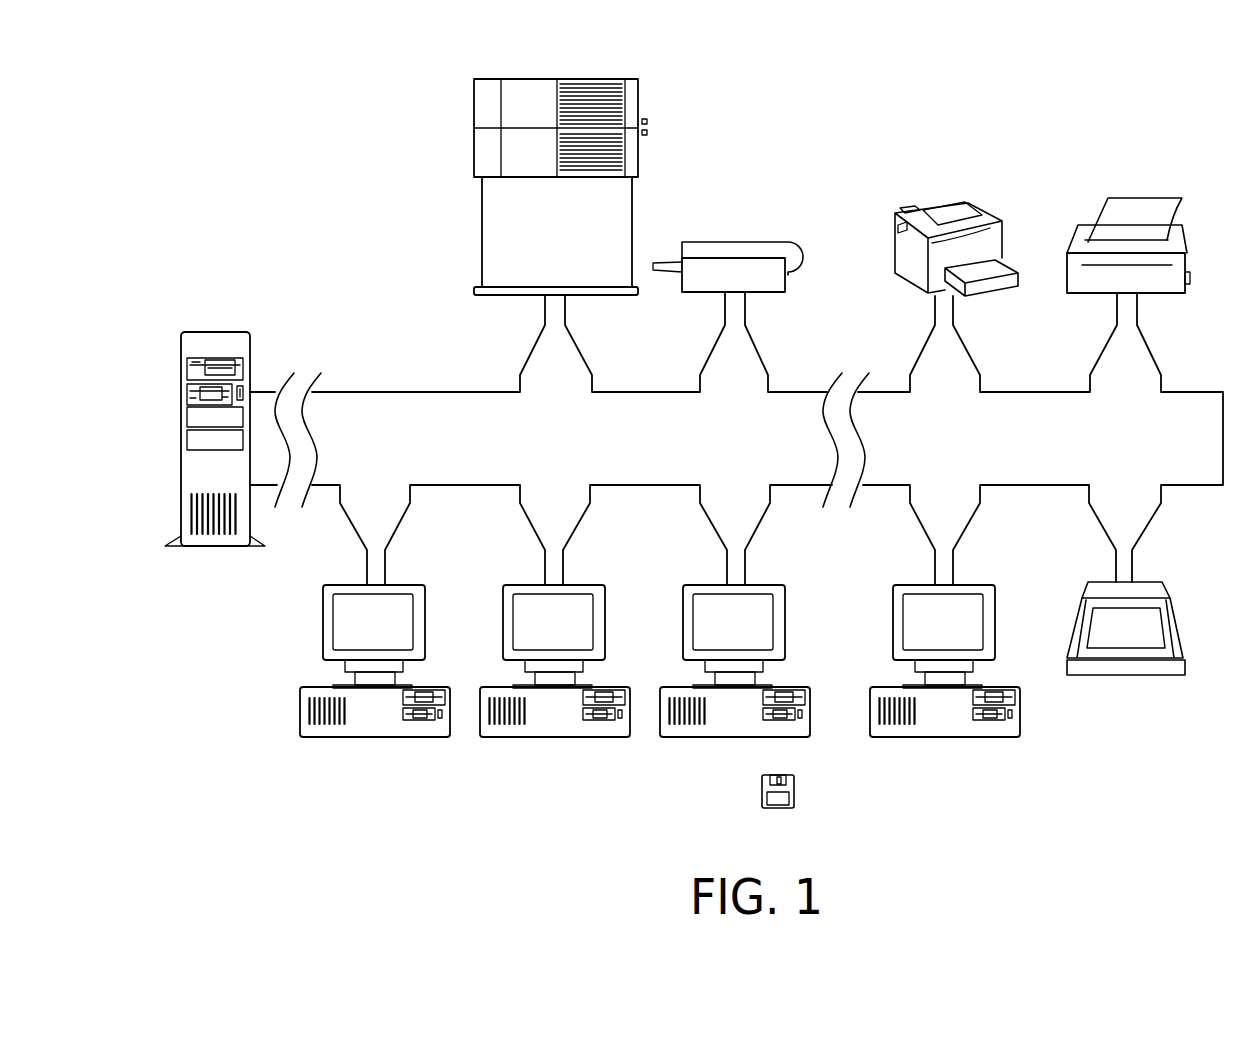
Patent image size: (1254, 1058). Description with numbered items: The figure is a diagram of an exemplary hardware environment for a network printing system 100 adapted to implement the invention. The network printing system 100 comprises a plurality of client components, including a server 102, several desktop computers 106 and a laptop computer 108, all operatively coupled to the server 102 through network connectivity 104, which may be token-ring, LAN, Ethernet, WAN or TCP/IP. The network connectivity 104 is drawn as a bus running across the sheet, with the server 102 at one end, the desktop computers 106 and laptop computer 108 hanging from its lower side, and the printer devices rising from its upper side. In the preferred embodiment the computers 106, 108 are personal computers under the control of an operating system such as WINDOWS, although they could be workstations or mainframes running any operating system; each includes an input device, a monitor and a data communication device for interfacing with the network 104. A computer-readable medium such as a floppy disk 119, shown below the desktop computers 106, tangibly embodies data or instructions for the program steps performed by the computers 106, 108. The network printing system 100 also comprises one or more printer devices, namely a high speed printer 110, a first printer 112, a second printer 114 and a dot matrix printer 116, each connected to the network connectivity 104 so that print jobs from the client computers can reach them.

The network printing system 100 is at (1016, 90).
The server 102 is at (208, 548).
The network connectivity 104 is at (342, 392).
The desktop computers 106 is at (350, 737).
The laptop computer 108 is at (1152, 675).
The high speed printer 110 is at (540, 79).
The first printer 112 is at (737, 242).
The second printer 114 is at (970, 210).
The dot matrix printer 116 is at (1158, 198).
The floppy disk 119 is at (776, 808).